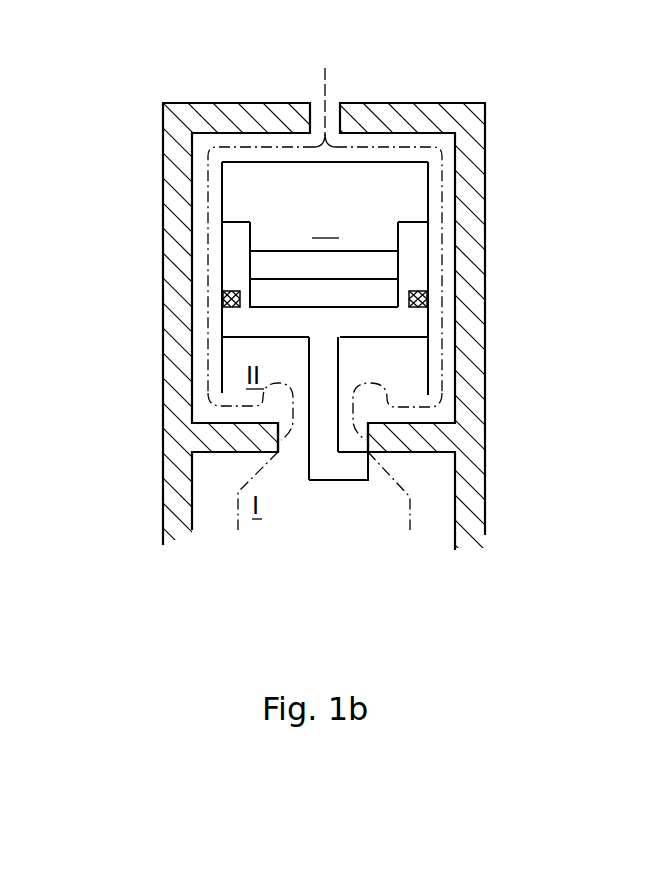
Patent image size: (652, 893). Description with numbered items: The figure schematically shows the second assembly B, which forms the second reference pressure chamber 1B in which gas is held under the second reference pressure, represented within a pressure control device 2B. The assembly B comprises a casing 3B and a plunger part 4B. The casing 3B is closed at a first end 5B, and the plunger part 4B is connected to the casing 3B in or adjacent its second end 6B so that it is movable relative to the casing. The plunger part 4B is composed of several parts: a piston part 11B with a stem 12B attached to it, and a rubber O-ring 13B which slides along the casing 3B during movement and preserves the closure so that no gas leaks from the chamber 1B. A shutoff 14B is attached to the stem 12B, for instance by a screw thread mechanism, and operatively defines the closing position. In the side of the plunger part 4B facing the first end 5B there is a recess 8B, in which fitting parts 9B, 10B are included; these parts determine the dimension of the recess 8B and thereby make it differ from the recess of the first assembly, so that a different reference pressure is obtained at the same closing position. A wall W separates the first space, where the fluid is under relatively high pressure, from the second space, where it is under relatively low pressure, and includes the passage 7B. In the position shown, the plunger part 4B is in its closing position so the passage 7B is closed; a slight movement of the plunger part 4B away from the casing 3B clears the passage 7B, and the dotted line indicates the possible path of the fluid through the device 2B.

The second reference pressure chamber 1B is at (279, 180).
The pressure control device 2B is at (505, 295).
The casing 3B is at (416, 162).
The plunger part 4B is at (405, 323).
The first end 5B is at (367, 162).
The second end 6B is at (402, 398).
The passage 7B is at (300, 442).
The recess 8B is at (278, 217).
The fitting part 9B is at (278, 295).
The fitting part 10B is at (278, 267).
The piston part 11B is at (242, 321).
The stem 12B is at (323, 368).
The rubber O-ring 13B is at (222, 298).
The shutoff 14B is at (323, 465).
The second assembly B is at (412, 245).
The wall W is at (432, 438).